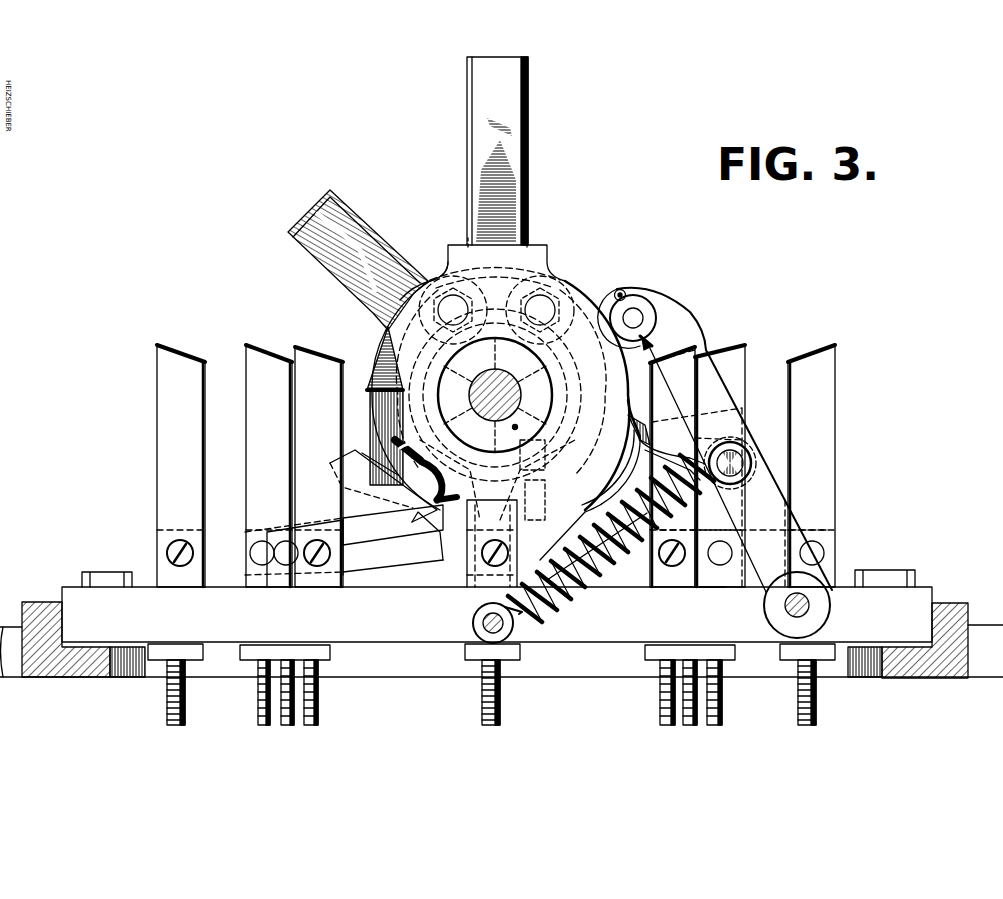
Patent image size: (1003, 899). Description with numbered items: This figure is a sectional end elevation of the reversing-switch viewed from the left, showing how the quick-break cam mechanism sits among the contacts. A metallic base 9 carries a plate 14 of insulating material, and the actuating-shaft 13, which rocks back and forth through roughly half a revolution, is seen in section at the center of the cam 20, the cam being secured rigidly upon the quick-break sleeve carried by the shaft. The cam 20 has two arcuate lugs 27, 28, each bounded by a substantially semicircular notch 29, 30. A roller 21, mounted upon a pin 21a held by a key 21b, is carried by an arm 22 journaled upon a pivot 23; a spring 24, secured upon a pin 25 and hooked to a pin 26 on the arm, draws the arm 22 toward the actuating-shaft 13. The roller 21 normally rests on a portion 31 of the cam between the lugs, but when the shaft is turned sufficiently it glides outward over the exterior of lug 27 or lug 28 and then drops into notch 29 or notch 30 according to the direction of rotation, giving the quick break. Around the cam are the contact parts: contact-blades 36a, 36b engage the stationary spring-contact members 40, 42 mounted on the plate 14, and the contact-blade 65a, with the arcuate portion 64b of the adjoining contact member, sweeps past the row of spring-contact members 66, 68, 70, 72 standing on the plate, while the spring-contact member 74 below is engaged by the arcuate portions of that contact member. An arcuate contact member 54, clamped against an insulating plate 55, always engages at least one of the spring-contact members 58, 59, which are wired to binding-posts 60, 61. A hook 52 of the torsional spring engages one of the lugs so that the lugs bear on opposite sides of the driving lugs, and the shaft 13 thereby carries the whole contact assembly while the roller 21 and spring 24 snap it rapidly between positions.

The metallic base 9 is at (38, 610).
The actuating-shaft 13 is at (470, 387).
The plate of insulating material 14 is at (497, 623).
The cam 20 is at (506, 394).
The roller 21 is at (630, 293).
The pin 21a is at (635, 317).
The key 21b is at (652, 342).
The arm 22 is at (745, 513).
The pivot 23 is at (806, 600).
The spring 24 is at (618, 578).
The pin 25 is at (520, 652).
The pin 26 is at (742, 470).
The arcuate lug 27 is at (622, 458).
The arcuate lug 28 is at (531, 246).
The notch 29 is at (628, 472).
The notch 30 is at (448, 262).
The portion of the cam 31 is at (613, 302).
The contact-blade 36a is at (318, 219).
The contact-blade 36b is at (738, 420).
The stationary contact member 40 is at (272, 466).
The stationary contact member 42 is at (722, 466).
The hook 52 is at (402, 452).
The arcuate contact member 54 is at (383, 486).
The insulating plate 55 is at (418, 514).
The spring-contact member 58 is at (344, 540).
The spring-contact member 59 is at (615, 530).
The binding-post 60 is at (283, 578).
The binding-post 61 is at (708, 587).
The arcuate-shaped portion 64b is at (388, 382).
The contact-blade 65a is at (497, 151).
The spring-contact member 66 is at (181, 466).
The spring-contact member 68 is at (319, 467).
The spring-contact member 70 is at (672, 467).
The spring-contact member 72 is at (811, 466).
The spring-contact member 74 is at (466, 555).